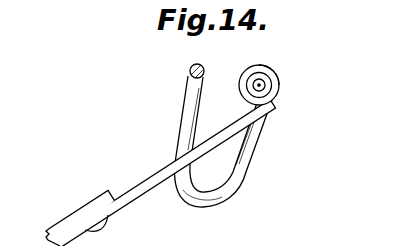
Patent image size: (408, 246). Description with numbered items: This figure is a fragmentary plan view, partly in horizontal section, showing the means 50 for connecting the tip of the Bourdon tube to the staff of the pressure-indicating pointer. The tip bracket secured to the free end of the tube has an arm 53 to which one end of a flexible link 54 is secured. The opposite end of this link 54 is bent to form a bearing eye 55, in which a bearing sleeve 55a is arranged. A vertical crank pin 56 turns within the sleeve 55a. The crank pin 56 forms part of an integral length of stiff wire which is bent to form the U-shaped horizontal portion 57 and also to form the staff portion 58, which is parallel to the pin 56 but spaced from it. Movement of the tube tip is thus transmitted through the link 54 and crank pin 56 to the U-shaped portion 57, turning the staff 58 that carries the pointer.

The latch assembly 50 is at (258, 245).
The arm 53 is at (86, 208).
The flexible link 54 is at (142, 185).
The bearing eye 55 is at (265, 67).
The bearing sleeve 55a is at (264, 78).
The crank pin 56 is at (262, 86).
The U-shaped horizontal portion 57 is at (252, 148).
The staff portion 58 is at (189, 70).